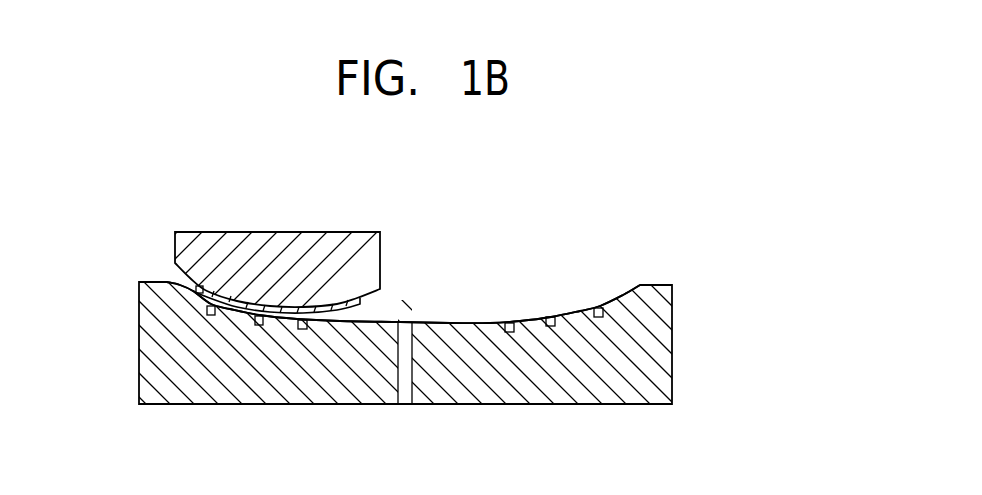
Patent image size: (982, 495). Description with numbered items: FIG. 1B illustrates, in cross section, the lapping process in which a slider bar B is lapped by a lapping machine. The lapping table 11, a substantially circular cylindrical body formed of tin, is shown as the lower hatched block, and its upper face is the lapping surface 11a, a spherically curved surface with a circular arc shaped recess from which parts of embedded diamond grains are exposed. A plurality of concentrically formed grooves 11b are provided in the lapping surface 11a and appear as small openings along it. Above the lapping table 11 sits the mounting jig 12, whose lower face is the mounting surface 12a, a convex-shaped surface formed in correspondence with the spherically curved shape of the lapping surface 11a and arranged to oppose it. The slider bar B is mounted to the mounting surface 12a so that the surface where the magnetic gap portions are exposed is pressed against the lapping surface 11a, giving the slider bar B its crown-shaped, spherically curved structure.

The lapping table 11 is at (662, 347).
The lapping surface 11a is at (449, 323).
The grooves 11b is at (302, 329).
The mounting jig 12 is at (318, 250).
The mounting surface 12a is at (200, 293).
The slider bar B is at (204, 296).